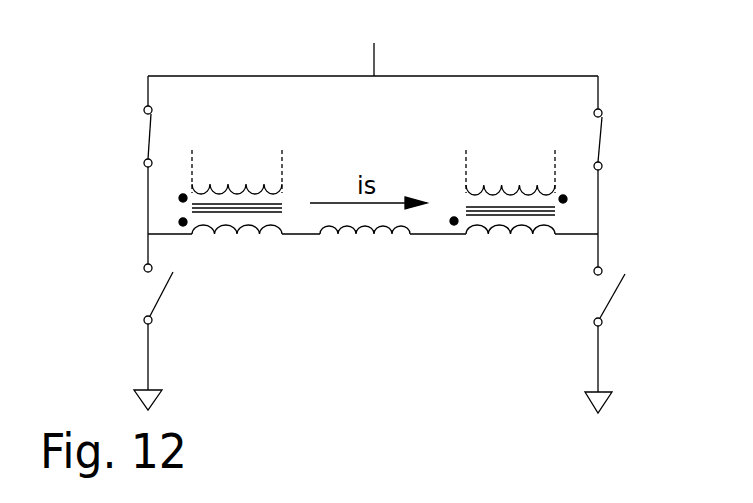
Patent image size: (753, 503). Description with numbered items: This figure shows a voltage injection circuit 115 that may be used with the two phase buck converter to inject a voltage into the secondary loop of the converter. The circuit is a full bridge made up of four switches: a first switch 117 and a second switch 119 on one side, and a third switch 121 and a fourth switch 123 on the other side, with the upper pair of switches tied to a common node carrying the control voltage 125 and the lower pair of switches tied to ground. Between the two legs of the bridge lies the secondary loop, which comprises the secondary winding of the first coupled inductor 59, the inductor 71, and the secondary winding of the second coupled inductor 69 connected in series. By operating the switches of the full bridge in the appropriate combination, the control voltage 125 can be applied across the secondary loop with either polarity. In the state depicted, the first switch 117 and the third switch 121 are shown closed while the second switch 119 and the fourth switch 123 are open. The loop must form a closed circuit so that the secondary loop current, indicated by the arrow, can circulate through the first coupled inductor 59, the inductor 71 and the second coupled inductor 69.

The voltage injection circuit 115 is at (185, 38).
The switch S3a 117 is at (128, 137).
The switch S3b 119 is at (140, 308).
The switch S3c 121 is at (612, 160).
The switch S3d 123 is at (620, 311).
The control voltage Vc 125 is at (387, 59).
The coupled inductor T1 59 is at (257, 245).
The coupled inductor T2 69 is at (538, 242).
The inductor L 71 is at (342, 247).